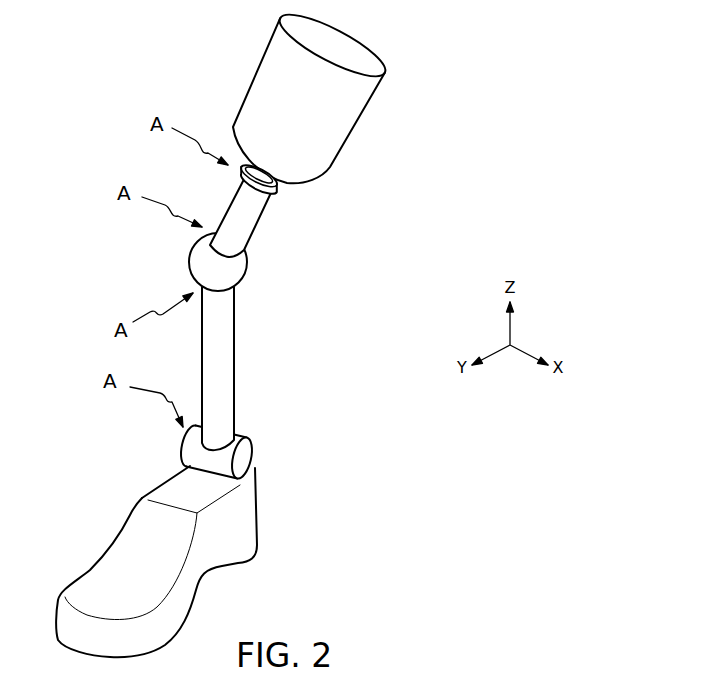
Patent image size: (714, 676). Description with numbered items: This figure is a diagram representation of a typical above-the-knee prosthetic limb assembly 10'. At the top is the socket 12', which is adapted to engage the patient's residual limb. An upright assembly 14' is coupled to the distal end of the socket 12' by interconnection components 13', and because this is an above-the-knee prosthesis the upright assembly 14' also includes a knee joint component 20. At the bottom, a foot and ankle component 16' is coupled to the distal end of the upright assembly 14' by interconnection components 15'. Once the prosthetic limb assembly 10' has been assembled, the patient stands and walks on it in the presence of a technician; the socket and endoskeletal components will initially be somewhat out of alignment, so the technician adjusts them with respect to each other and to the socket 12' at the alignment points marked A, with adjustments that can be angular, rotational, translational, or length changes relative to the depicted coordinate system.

The above the knee prosthetic limb assembly 10' is at (332, 330).
The socket 12' is at (324, 93).
The interconnection components 13' is at (292, 195).
The upright assembly 14' is at (285, 272).
The interconnection components 15' is at (272, 442).
The foot and ankle component 16' is at (180, 561).
The knee joint component 20 is at (195, 268).